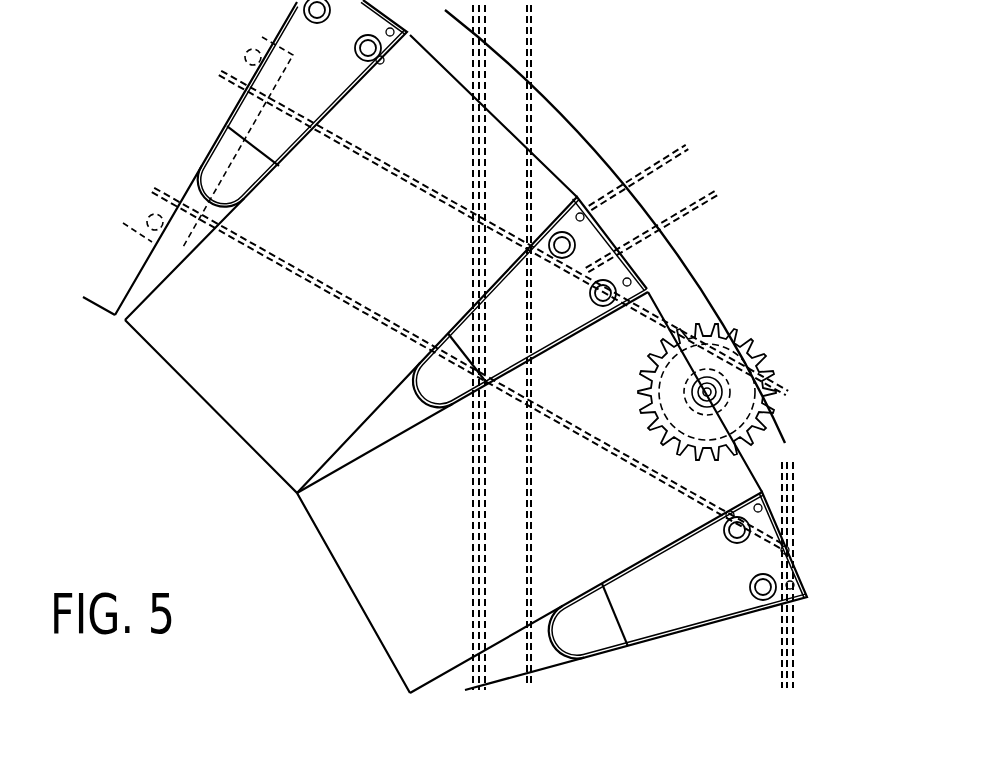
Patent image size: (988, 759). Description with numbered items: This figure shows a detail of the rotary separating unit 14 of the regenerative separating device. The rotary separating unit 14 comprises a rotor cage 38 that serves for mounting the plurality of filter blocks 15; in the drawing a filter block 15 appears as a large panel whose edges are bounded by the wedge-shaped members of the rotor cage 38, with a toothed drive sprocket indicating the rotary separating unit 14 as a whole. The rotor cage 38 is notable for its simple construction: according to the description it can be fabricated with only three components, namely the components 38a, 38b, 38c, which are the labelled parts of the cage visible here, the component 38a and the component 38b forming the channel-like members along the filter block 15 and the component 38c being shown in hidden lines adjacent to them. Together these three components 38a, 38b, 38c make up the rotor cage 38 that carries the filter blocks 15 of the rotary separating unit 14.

The rotary separating unit 14 is at (690, 312).
The filter blocks 15 is at (255, 425).
The rotor cage 38 is at (237, 176).
The first component of the rotor cage 38a is at (570, 340).
The second component of the rotor cage 38b is at (402, 390).
The third component of the rotor cage 38c is at (603, 233).